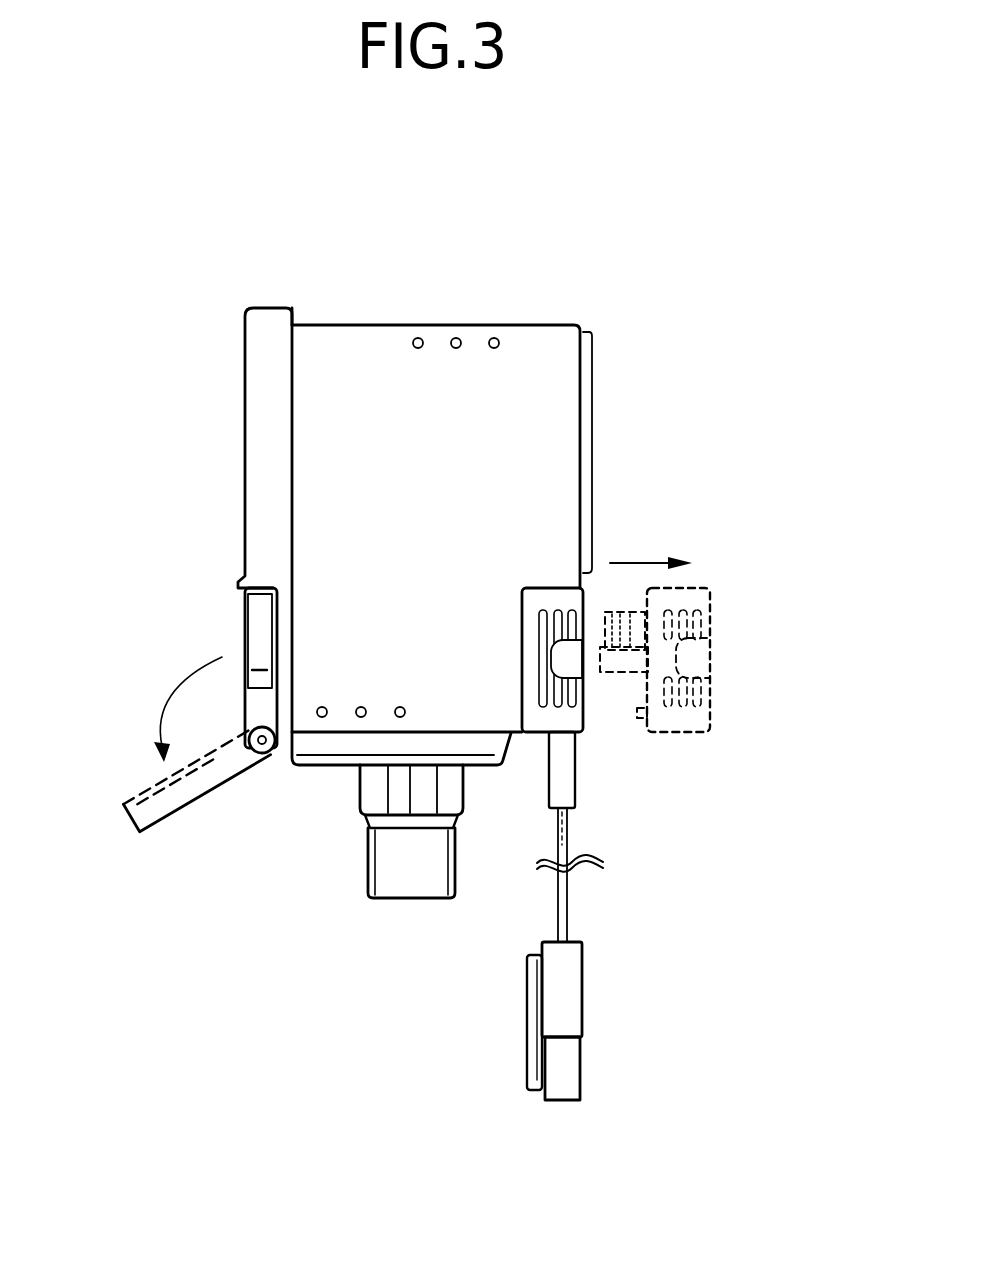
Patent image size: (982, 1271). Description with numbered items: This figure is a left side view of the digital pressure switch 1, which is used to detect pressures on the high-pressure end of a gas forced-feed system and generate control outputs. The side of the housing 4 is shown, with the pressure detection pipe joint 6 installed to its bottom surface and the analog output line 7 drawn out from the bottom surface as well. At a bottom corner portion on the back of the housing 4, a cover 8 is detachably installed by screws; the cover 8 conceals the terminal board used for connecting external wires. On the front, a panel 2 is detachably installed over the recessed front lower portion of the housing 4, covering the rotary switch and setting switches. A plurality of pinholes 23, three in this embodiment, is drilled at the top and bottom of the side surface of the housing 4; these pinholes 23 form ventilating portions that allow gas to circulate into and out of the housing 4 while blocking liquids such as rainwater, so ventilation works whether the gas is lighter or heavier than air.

The digital pressure switch 1 is at (594, 290).
The panel 2 is at (243, 625).
The housing 4 is at (570, 387).
The pressure detection pipe joint 6 is at (417, 900).
The analog output line 7 is at (582, 998).
The cover 8 is at (712, 712).
The pinholes 23 is at (418, 350).